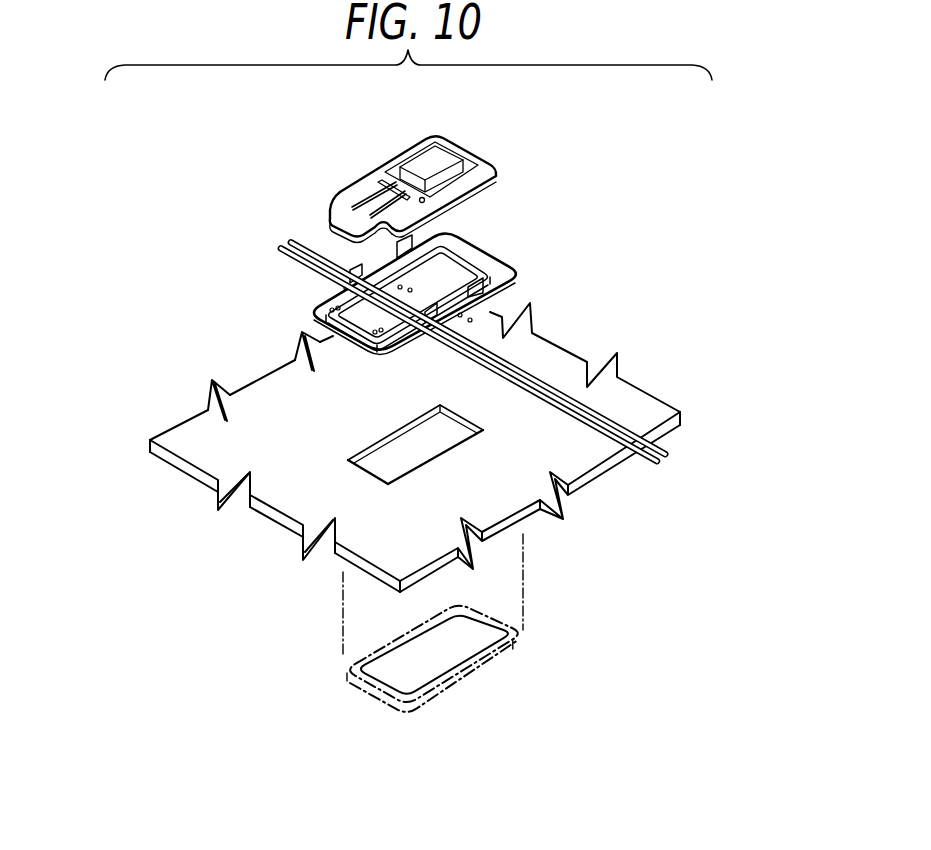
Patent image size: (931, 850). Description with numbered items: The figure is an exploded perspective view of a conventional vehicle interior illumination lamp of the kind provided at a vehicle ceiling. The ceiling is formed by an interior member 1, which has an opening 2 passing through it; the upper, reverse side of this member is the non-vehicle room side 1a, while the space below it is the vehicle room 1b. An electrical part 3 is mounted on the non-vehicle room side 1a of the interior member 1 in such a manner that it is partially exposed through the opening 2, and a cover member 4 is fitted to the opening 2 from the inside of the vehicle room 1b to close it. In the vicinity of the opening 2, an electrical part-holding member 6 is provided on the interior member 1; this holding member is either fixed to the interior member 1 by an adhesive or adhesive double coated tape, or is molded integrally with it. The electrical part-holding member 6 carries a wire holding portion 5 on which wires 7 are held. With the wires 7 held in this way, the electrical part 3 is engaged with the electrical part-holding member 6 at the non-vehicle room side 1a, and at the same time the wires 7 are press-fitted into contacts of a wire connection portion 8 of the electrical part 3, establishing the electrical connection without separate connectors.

The interior member 1 is at (540, 328).
The reverse side (non-vehicle room side) 1a is at (564, 361).
The vehicle room 1b is at (585, 489).
The opening 2 is at (407, 452).
The electrical part 3 is at (415, 141).
The cover member 4 is at (487, 674).
The wire holding portion 5 is at (350, 347).
The electrical part-holding member 6 is at (474, 253).
The wires 7 is at (291, 255).
The wire connection portion 8 is at (337, 203).